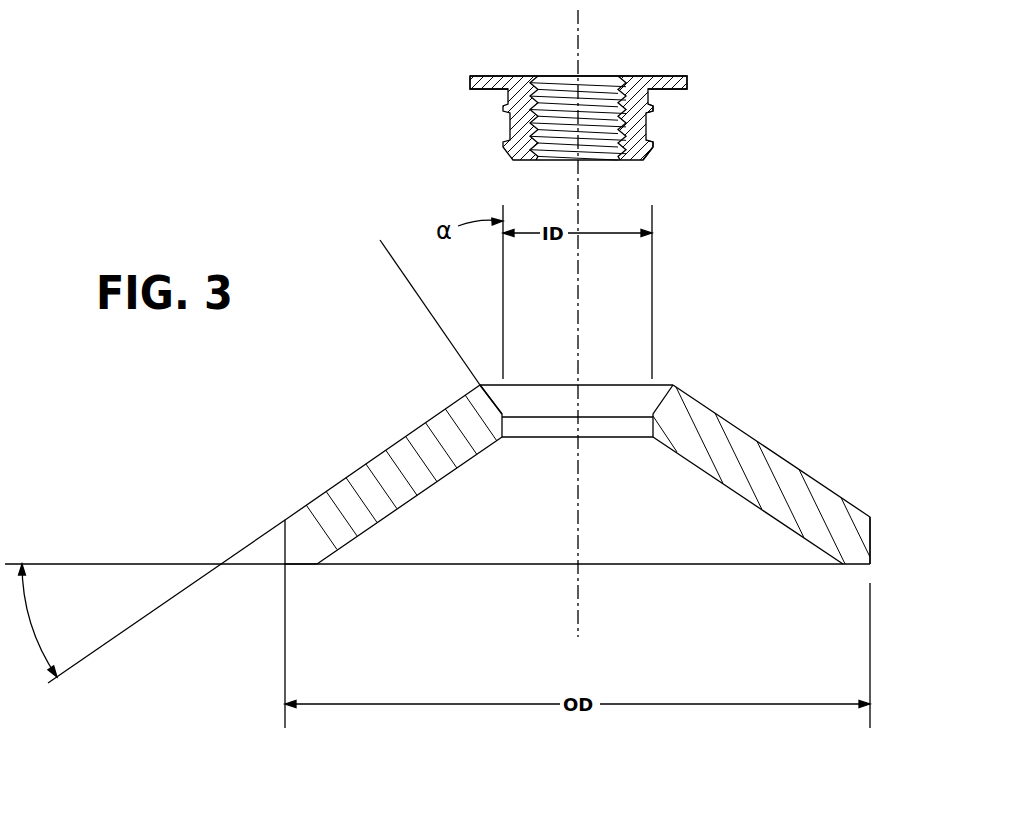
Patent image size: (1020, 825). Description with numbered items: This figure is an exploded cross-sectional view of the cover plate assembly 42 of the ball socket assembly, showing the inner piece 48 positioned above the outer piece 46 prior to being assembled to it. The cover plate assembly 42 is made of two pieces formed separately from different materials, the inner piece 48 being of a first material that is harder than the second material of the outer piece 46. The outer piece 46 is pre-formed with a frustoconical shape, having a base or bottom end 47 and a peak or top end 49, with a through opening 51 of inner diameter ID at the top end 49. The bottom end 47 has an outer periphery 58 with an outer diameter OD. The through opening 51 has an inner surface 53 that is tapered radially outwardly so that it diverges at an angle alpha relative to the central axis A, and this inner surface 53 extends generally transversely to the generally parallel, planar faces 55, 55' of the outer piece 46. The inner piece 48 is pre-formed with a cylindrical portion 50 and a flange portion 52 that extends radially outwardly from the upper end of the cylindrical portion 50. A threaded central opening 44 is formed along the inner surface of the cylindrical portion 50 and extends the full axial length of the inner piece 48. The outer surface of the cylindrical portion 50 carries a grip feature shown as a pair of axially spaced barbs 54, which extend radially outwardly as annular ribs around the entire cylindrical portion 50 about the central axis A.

The cover plate assembly 42 is at (465, 446).
The threaded central opening 44 is at (596, 82).
The outer piece 46 is at (815, 493).
The bottom end 47 is at (285, 562).
The inner piece 48 is at (660, 155).
The top end 49 is at (674, 386).
The cylindrical portion 50 is at (562, 132).
The through opening 51 is at (658, 388).
The flange portion 52 is at (674, 77).
The inner surface 53 is at (503, 402).
The barbs 54 is at (652, 143).
The face 55 is at (577, 460).
The face 55' is at (580, 531).
The outer periphery 58 is at (872, 542).
The central axis A is at (578, 583).